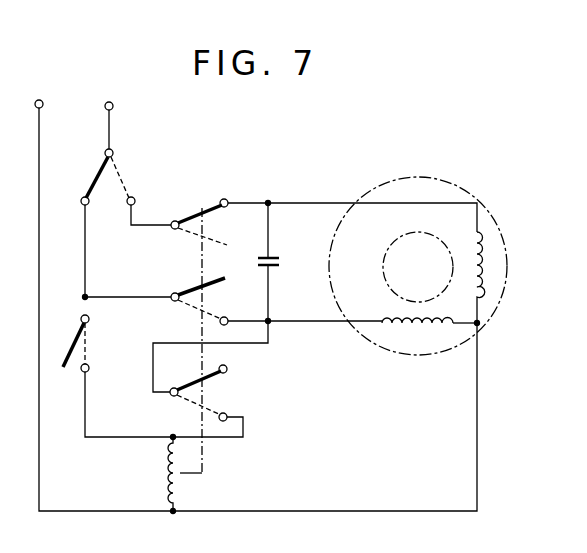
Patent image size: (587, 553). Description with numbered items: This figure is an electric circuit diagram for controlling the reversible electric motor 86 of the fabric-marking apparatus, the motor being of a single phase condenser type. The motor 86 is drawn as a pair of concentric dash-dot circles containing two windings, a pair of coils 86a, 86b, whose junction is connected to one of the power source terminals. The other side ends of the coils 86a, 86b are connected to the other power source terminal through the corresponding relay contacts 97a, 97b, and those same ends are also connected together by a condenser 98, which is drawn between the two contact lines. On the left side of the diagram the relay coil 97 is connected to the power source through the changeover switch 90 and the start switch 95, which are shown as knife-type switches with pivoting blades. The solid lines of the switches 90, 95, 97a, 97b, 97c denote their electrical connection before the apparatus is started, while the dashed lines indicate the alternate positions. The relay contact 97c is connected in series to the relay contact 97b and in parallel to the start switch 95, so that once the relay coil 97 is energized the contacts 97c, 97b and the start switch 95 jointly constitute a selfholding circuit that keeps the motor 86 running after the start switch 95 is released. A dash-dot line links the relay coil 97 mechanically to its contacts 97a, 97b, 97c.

The reversible electric motor 86 is at (458, 183).
The coil 86a is at (484, 257).
The coil 86b is at (407, 325).
The changeover switch 90 is at (118, 175).
The start switch 95 is at (88, 348).
The relay coil 97 is at (180, 497).
The relay contact 97a is at (221, 201).
The relay contact 97b is at (208, 288).
The relay contact 97c is at (212, 383).
The condenser 98 is at (280, 262).